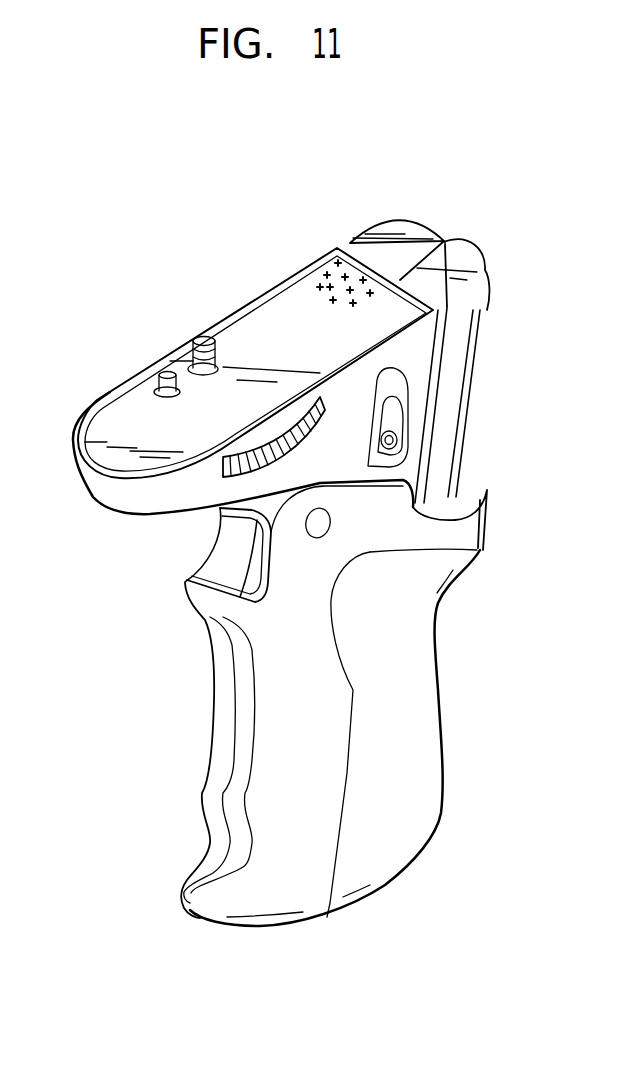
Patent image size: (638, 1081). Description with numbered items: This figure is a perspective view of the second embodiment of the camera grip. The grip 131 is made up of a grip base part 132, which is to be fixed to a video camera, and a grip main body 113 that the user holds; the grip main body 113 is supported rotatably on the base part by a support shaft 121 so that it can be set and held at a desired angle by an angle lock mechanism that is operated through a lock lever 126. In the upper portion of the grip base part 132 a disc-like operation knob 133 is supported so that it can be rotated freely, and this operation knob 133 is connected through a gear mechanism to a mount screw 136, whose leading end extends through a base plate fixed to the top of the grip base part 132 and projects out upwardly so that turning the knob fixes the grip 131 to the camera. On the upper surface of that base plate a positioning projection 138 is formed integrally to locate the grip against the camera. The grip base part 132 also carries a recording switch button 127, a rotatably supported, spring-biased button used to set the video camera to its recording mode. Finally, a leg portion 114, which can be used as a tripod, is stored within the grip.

The grip main body 113 is at (400, 832).
The leg portion 114 is at (472, 268).
The support shaft 121 is at (322, 525).
The lock lever 126 is at (393, 443).
The recording switch button 127 is at (217, 550).
The grip 131 is at (97, 400).
The grip base part 132 is at (418, 350).
The operation knob 133 is at (233, 477).
The mount screw 136 is at (206, 338).
The positioning projection 138 is at (166, 368).